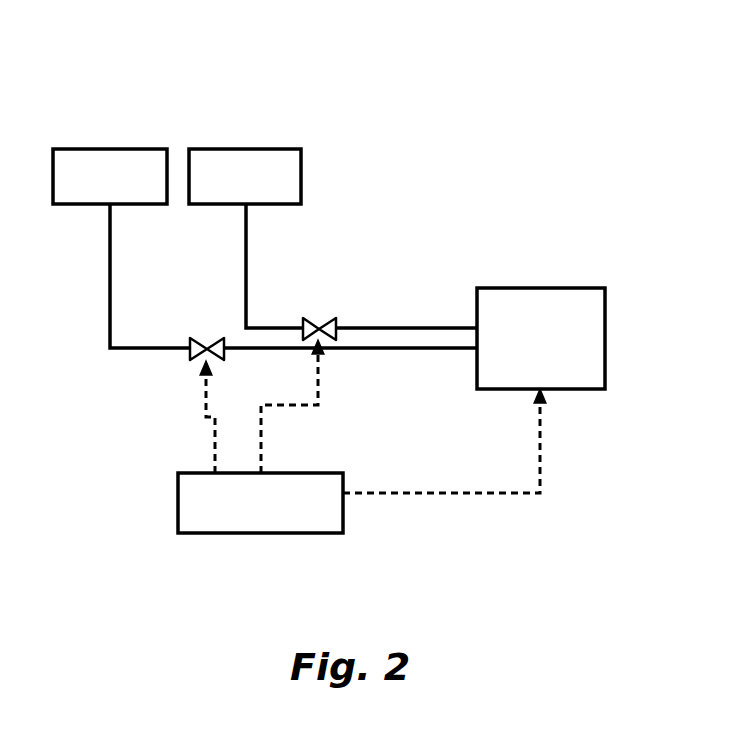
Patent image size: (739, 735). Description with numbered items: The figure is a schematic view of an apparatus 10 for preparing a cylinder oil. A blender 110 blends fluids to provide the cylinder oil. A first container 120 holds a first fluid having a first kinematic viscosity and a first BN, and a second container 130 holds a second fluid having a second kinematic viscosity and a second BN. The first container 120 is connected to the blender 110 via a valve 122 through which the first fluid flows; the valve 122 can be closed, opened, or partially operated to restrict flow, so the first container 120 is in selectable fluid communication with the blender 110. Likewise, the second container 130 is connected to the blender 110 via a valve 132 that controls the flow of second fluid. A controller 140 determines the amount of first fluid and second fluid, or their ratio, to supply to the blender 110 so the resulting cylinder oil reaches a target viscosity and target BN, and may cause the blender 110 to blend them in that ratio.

The apparatus 10 is at (511, 117).
The blender 110 is at (414, 338).
The first container 120 is at (121, 248).
The second container 130 is at (246, 238).
The valve 122 is at (195, 342).
The valve 132 is at (305, 320).
The controller 140 is at (362, 436).